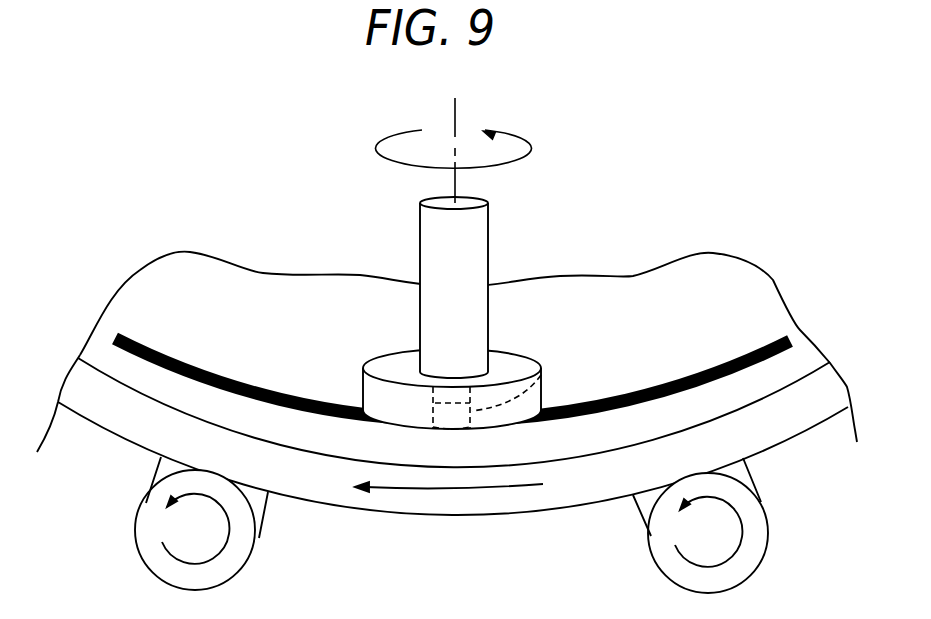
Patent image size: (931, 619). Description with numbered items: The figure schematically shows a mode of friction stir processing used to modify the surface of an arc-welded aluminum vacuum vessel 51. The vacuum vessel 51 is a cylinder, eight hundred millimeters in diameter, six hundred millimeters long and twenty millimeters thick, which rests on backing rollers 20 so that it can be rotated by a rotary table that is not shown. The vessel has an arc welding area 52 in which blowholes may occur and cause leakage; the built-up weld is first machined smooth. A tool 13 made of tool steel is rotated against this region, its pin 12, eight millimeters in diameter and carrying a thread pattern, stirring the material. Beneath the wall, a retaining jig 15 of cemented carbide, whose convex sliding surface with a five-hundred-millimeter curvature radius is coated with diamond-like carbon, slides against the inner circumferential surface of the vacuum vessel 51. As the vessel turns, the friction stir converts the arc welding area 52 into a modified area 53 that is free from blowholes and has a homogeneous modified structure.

The vacuum vessel 51 is at (170, 315).
The tool 13 is at (470, 250).
The retaining jig 15 is at (393, 364).
The pin 12 is at (542, 375).
The backing rollers 20 is at (158, 533).
The arc welding area 52 is at (590, 408).
The modified area 53 is at (311, 408).